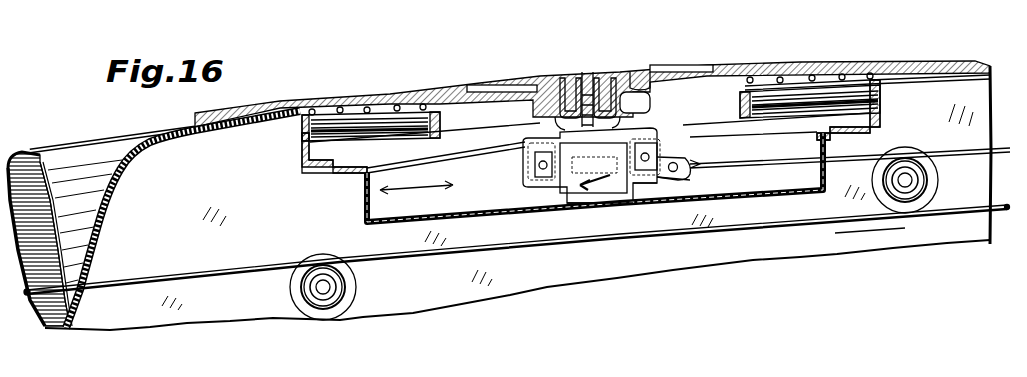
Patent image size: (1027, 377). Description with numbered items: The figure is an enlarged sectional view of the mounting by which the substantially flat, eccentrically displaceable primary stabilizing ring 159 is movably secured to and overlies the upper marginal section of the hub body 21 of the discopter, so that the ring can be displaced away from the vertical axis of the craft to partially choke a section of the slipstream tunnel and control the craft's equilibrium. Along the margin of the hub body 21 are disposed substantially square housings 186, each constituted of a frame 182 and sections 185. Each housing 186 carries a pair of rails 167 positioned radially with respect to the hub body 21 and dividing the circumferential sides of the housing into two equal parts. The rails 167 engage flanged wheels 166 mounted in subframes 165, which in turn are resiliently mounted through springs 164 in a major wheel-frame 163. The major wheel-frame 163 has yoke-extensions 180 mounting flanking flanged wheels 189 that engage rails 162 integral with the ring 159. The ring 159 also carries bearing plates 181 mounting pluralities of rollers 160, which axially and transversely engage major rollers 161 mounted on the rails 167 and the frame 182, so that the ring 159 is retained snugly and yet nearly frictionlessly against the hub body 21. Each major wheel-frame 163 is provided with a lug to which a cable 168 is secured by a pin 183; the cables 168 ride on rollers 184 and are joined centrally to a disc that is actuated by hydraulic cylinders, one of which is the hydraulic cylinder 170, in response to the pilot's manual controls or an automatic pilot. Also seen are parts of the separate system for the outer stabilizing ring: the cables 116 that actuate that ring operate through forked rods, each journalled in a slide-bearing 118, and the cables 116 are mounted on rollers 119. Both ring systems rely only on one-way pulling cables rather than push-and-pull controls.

The hub body 21 is at (175, 165).
The cables 116 is at (837, 220).
The slide-bearing 118 is at (235, 3).
The rollers 119 is at (300, 305).
The primary stabilizing ring 159 is at (722, 62).
The rollers 160 is at (333, 104).
The major rollers 161 is at (887, 113).
The rails 162 is at (648, 72).
The major wheel-frames 163 is at (557, 128).
The springs 164 is at (628, 190).
The subframes 165 is at (575, 203).
The flanged wheels 166 is at (528, 187).
The rails 167 is at (380, 203).
The cable 168 is at (337, 10).
The hydraulic cylinder 170 is at (418, 0).
The yoke-extensions 180 is at (586, 70).
The bearing plates 181 is at (382, 102).
The frames 182 is at (300, 157).
The pin 183 is at (690, 180).
The rollers 184 is at (923, 200).
The sections 185 is at (411, 200).
The housings 186 is at (368, 220).
The flanking flanged wheels 189 is at (571, 76).